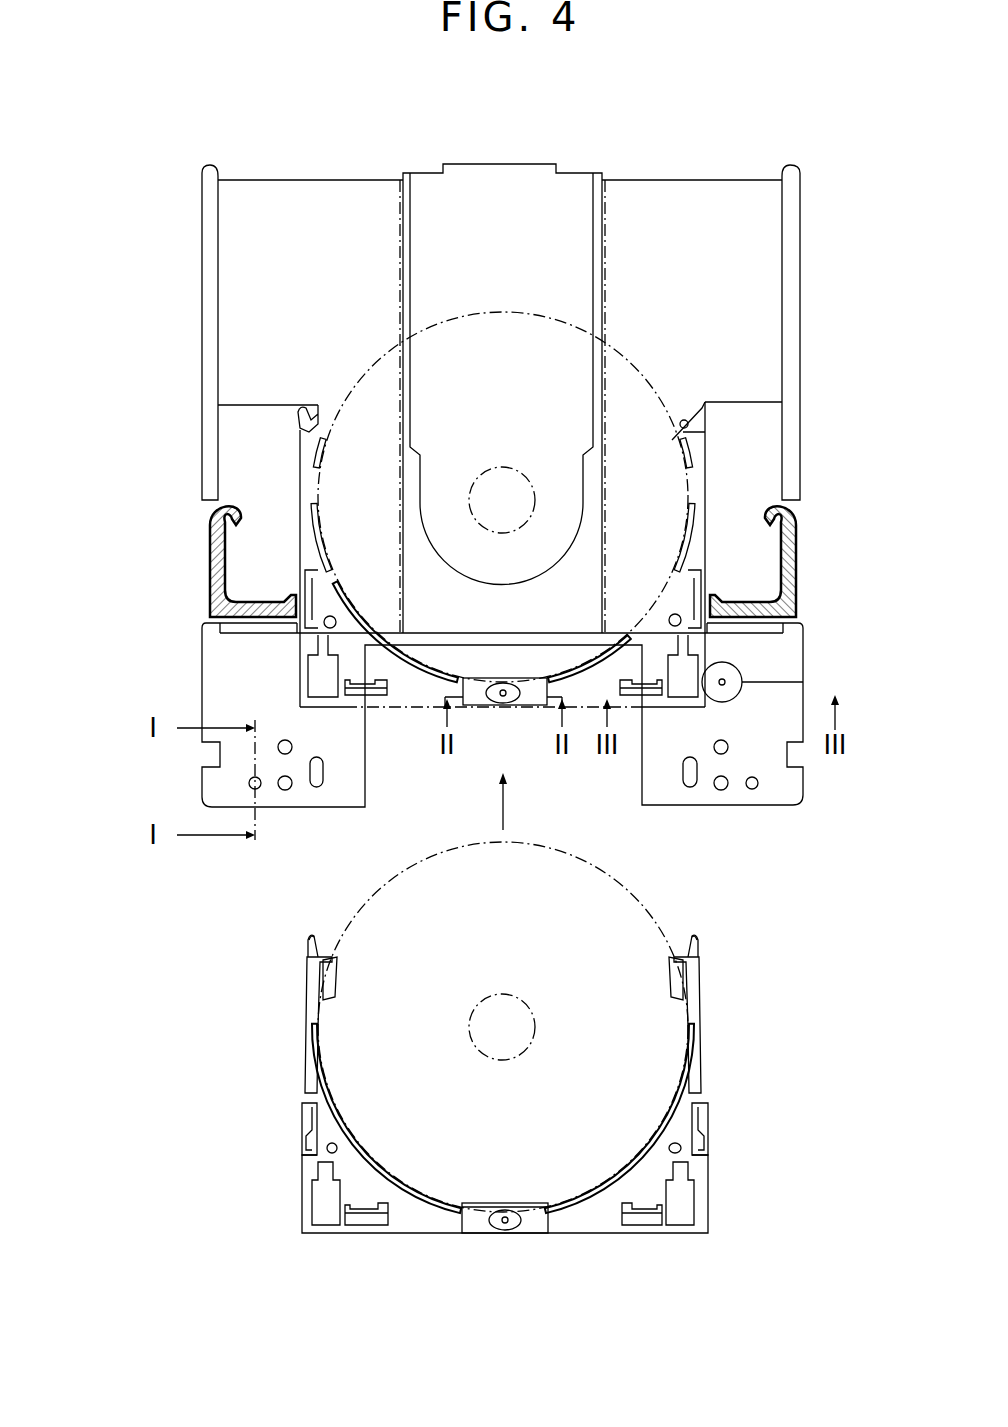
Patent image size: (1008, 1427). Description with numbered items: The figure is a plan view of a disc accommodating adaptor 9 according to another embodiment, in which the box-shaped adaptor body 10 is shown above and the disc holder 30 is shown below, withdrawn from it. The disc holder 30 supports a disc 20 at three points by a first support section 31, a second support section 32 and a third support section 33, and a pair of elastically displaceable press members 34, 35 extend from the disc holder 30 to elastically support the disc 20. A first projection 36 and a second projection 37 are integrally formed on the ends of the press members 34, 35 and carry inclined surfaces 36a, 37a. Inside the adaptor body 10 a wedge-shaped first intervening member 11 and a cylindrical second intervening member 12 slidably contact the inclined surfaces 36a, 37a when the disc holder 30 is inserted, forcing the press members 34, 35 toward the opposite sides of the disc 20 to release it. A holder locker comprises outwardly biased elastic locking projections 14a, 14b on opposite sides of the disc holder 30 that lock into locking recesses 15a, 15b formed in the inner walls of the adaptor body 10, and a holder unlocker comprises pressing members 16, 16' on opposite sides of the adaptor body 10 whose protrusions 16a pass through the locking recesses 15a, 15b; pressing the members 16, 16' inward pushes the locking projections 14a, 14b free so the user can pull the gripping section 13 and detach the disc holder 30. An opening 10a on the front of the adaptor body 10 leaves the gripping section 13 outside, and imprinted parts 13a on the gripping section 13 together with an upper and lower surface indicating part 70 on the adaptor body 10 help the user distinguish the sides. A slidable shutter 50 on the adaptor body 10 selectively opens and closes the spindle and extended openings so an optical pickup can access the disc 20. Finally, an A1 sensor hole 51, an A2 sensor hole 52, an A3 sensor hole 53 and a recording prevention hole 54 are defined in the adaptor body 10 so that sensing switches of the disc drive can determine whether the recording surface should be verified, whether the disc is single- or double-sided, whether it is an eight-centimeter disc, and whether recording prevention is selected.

The disc accommodating adaptor 9 is at (68, 599).
The adaptor body 10 is at (806, 208).
The opening 10a is at (642, 785).
The first intervening member 11 is at (315, 405).
The second intervening member 12 is at (686, 420).
The gripping section 13 is at (476, 1239).
The imprinted part 13a is at (505, 1232).
The elastic locking projection 14a is at (302, 630).
The elastic locking projection 14b is at (707, 632).
The locking recess 15a is at (300, 588).
The locking recess 15b is at (705, 590).
The pressing member 16 is at (205, 561).
The pressing member 16' is at (798, 561).
The protrusion 16a is at (215, 595).
The disc 20 is at (678, 1063).
The disc holder 30 is at (298, 1239).
The first support section 31 is at (331, 958).
The second support section 32 is at (669, 962).
The third support section 33 is at (536, 1203).
The elastic press member 34 is at (307, 1030).
The elastic press member 35 is at (700, 1040).
The first projection 36 is at (307, 948).
The inclined surface 36a is at (313, 940).
The second projection 37 is at (703, 948).
The inclined surface 37a is at (694, 940).
The shutter 50 is at (486, 170).
The A1 sensor hole 51 is at (288, 745).
The A2 sensor hole 52 is at (290, 785).
The A3 sensor hole 53 is at (248, 783).
The recording prevention hole 54 is at (323, 772).
The upper and lower surface indicating part 70 is at (748, 697).